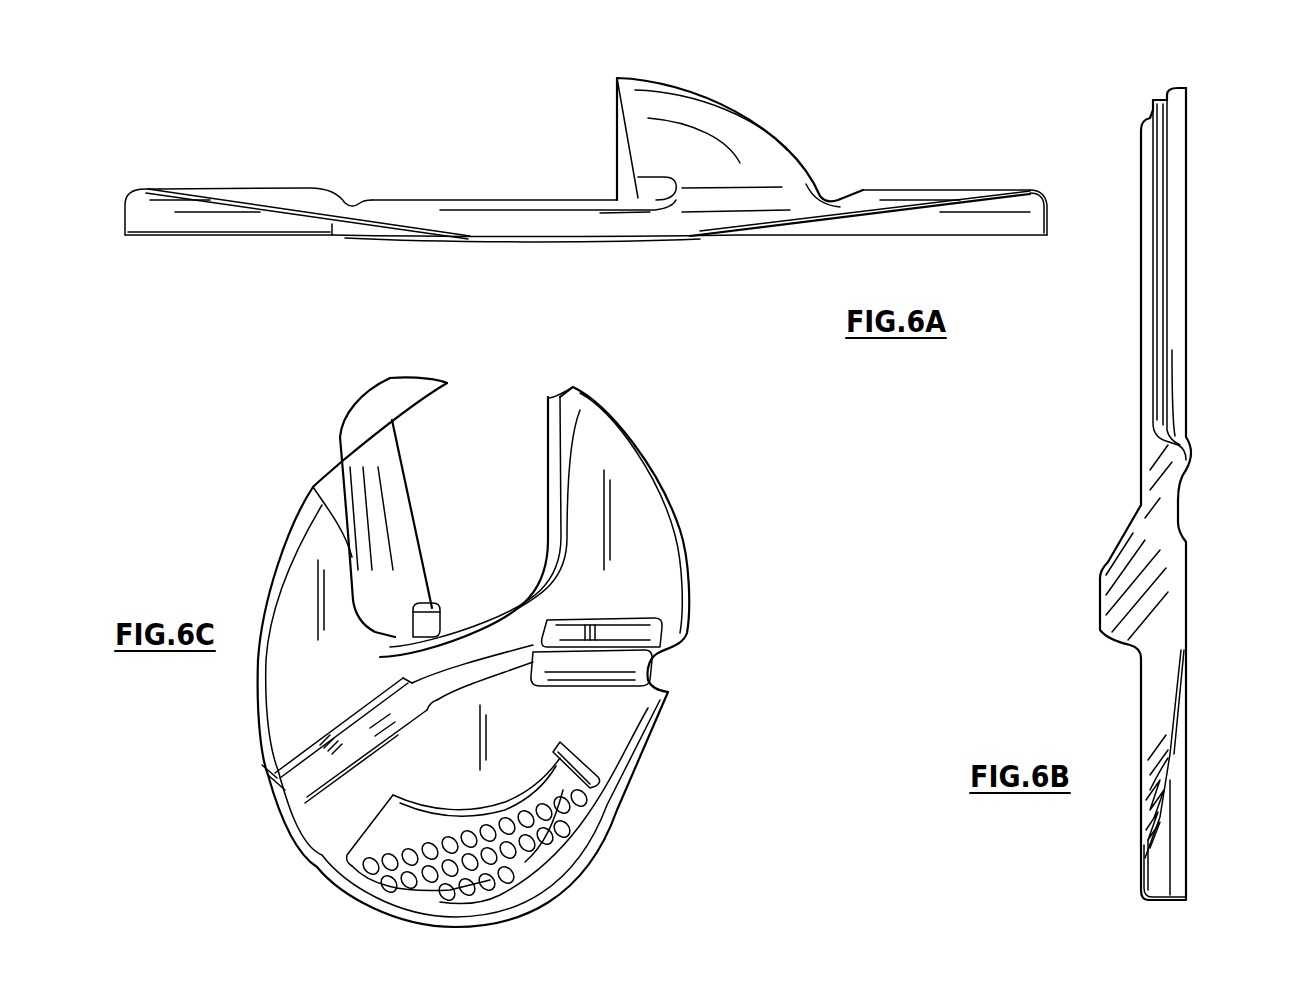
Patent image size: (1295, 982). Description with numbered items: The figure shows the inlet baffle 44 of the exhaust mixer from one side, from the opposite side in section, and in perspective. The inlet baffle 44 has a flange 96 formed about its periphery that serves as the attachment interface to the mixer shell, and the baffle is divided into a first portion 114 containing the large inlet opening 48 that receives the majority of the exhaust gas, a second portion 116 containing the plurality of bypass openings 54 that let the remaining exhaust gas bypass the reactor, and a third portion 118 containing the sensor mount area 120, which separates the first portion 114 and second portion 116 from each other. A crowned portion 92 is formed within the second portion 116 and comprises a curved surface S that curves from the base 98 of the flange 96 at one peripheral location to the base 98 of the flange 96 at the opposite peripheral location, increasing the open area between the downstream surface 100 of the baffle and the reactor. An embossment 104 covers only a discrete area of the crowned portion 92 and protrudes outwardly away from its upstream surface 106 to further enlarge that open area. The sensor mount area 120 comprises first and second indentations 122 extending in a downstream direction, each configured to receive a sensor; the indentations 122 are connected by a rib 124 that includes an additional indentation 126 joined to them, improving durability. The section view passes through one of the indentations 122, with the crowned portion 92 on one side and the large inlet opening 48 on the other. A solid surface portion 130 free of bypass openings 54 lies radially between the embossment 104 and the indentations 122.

In FIG. 6A, the inlet baffle 44 is at (880, 115).
In FIG. 6B, the inlet baffle 44 is at (1225, 174).
In FIG. 6C, the inlet baffle 44 is at (702, 410).
In FIG. 6A, the large inlet opening 48 is at (613, 170).
In FIG. 6B, the large inlet opening 48 is at (1169, 280).
In FIG. 6C, the large inlet opening 48 is at (416, 514).
In FIG. 6C, the bypass openings 54 is at (490, 888).
In FIG. 6A, the crowned portion 92 is at (222, 193).
In FIG. 6B, the crowned portion 92 is at (1180, 728).
In FIG. 6A, the flange 96 is at (123, 225).
In FIG. 6B, the flange 96 is at (1172, 866).
In FIG. 6C, the flange 96 is at (532, 752).
In FIG. 6A, the base of the flange 98 is at (141, 189).
In FIG. 6B, the base of the flange 98 is at (1143, 878).
In FIG. 6A, the downstream surface 100 is at (920, 193).
In FIG. 6C, the embossment 104 is at (575, 800).
In FIG. 6A, the upstream surface 106 is at (347, 227).
In FIG. 6C, the first portion 114 is at (636, 510).
In FIG. 6C, the second portion 116 is at (584, 743).
In FIG. 6C, the third portion 118 is at (638, 633).
In FIG. 6C, the sensor mount area 120 is at (553, 700).
In FIG. 6B, the indentations 122 is at (1177, 496).
In FIG. 6C, the indentations 122 is at (632, 660).
In FIG. 6C, the rib 124 is at (455, 655).
In FIG. 6C, the additional indentation 126 is at (485, 668).
In FIG. 6C, the solid surface portion 130 is at (447, 800).
In FIG. 6A, the curved surface S is at (875, 222).
In FIG. 6B, the curved surface S is at (1166, 795).